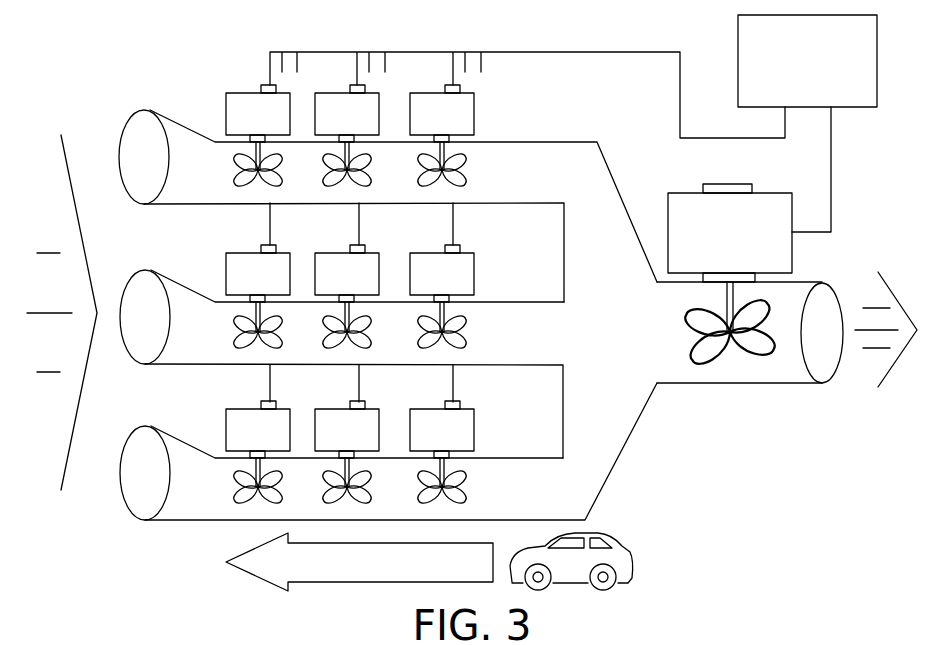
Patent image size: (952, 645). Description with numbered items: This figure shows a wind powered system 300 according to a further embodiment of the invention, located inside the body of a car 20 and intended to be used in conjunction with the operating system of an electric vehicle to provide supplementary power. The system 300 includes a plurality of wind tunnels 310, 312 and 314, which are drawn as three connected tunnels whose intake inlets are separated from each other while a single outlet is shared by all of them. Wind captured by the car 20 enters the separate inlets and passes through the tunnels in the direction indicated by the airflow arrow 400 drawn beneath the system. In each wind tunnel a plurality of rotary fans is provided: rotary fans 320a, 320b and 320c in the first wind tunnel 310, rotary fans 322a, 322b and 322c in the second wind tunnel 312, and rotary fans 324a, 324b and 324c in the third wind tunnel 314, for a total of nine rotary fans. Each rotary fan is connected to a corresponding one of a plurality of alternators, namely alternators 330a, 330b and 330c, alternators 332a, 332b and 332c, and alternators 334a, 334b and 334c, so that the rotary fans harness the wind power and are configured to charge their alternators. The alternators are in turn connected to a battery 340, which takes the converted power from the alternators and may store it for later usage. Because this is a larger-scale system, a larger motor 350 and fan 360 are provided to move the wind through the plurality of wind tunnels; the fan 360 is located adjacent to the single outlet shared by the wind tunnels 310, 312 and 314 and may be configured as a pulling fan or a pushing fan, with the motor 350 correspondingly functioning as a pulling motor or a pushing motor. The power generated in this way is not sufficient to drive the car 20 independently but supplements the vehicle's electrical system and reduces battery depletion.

The system 300 is at (33, 64).
The airflow direction arrow 400 is at (269, 589).
The wind tunnel 310 is at (168, 110).
The wind tunnel 312 is at (170, 268).
The wind tunnel 314 is at (165, 428).
The rotary fan 320a is at (237, 157).
The rotary fan 320b is at (375, 180).
The rotary fan 320c is at (467, 172).
The rotary fan 322a is at (233, 320).
The rotary fan 322b is at (375, 340).
The rotary fan 322c is at (467, 332).
The rotary fan 324a is at (240, 480).
The rotary fan 324b is at (373, 477).
The rotary fan 324c is at (468, 477).
The alternator 330a is at (243, 92).
The alternator 330b is at (338, 90).
The alternator 330c is at (428, 90).
The alternator 332a is at (257, 253).
The alternator 332b is at (333, 252).
The alternator 332c is at (474, 267).
The alternator 334a is at (253, 408).
The alternator 334b is at (340, 408).
The alternator 334c is at (467, 408).
The battery 340 is at (877, 87).
The motor 350 is at (792, 210).
The fan 360 is at (757, 357).
The car 20 is at (632, 557).